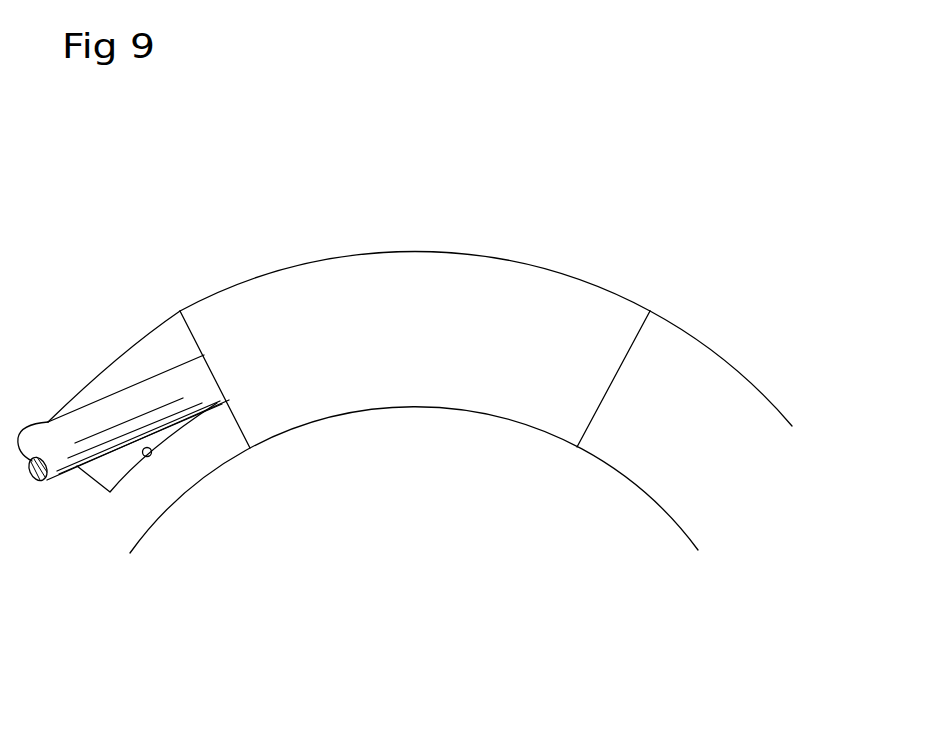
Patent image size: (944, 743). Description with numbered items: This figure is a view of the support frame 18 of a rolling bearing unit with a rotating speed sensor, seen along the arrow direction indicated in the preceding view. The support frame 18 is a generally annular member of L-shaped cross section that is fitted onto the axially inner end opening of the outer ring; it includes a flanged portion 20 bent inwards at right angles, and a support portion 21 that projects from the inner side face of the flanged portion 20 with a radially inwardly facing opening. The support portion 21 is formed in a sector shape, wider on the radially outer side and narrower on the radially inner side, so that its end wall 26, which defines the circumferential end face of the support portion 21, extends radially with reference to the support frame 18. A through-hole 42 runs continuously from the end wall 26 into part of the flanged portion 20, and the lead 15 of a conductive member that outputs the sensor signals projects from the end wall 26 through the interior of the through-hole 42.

The lead 15 is at (113, 421).
The support frame 18 is at (690, 365).
The flanged portion 20 is at (738, 405).
The support portion 21 is at (490, 272).
The end wall 26 is at (213, 378).
The through-hole 42 is at (145, 457).